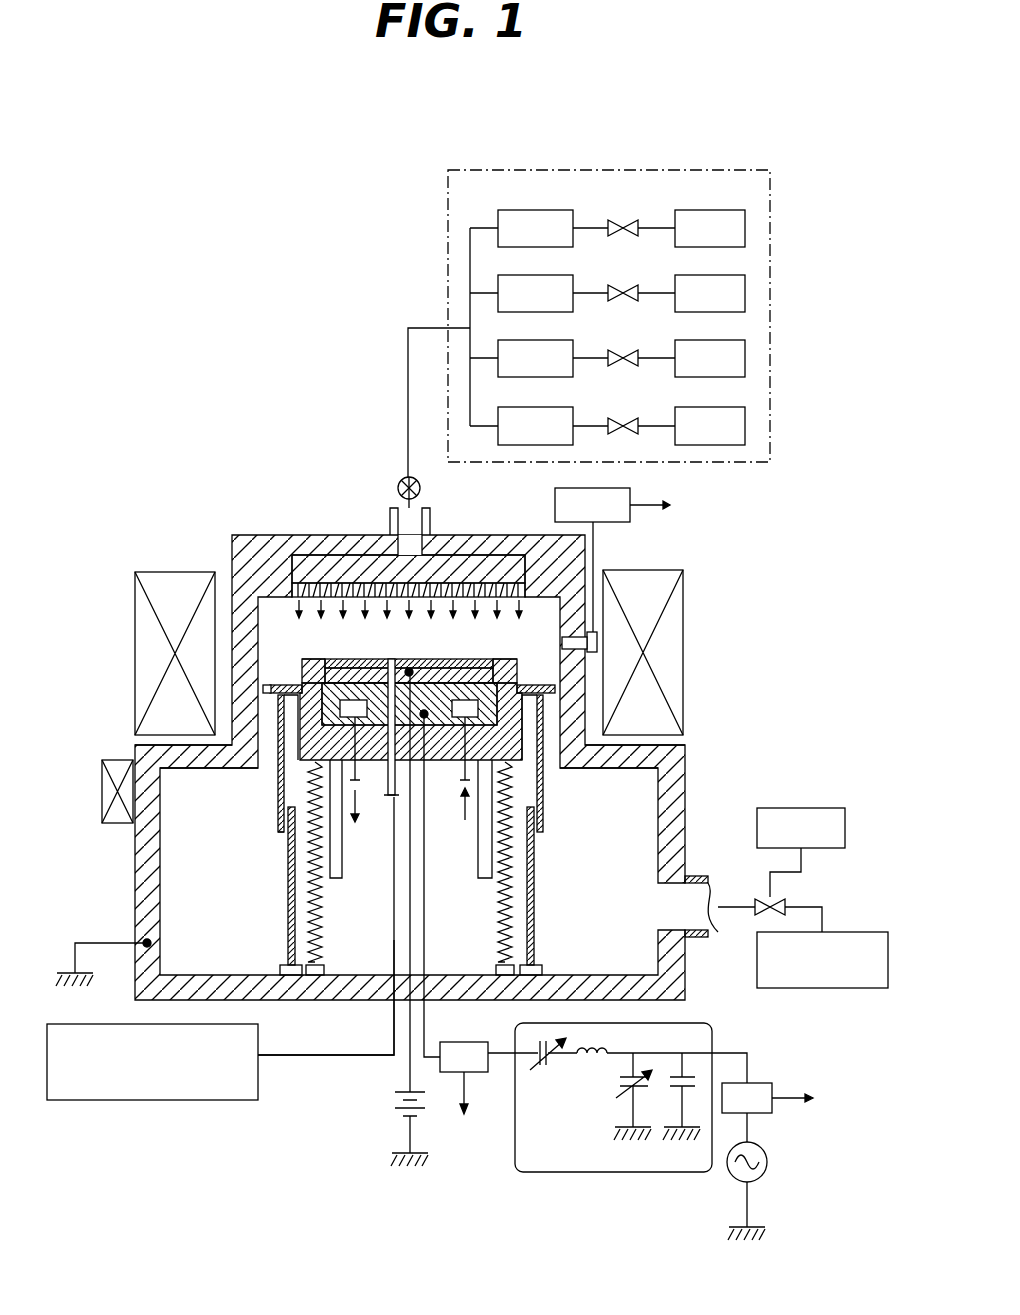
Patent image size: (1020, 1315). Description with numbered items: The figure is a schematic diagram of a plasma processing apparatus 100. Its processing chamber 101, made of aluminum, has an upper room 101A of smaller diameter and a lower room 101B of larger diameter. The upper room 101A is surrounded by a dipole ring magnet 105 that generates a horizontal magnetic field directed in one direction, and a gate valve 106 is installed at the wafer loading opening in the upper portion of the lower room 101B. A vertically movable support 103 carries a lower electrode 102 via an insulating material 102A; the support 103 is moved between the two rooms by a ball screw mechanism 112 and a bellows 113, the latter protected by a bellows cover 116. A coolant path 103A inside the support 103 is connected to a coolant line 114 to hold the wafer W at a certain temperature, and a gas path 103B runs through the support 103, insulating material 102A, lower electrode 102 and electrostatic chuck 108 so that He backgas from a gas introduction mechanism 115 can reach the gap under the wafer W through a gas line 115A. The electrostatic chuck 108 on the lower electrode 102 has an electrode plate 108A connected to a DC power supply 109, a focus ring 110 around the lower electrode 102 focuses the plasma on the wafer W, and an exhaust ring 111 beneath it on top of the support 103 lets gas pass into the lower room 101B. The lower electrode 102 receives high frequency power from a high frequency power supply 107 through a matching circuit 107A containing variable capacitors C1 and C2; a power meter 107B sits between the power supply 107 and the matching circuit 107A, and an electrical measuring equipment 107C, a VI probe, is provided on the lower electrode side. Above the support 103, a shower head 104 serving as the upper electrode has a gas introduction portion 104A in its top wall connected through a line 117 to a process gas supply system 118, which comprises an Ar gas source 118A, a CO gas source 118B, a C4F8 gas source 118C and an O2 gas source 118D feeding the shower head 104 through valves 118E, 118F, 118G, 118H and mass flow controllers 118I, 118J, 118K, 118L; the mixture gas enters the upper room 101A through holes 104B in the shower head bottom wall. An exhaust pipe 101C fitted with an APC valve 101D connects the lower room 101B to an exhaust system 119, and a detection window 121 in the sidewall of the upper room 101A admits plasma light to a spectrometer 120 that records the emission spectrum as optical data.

The plasma processing apparatus 100 is at (363, 152).
The processing chamber 101 is at (439, 767).
The upper room 101A is at (585, 612).
The lower room 101B is at (695, 785).
The exhaust pipe 101C is at (705, 875).
The APC valve 101D is at (748, 915).
The lower electrode 102 is at (285, 722).
The insulating material 102A is at (545, 790).
The support 103 is at (315, 855).
The coolant path 103A is at (310, 668).
The gas path 103B is at (392, 682).
The shower head 104 is at (397, 543).
The gas introduction portion 104A is at (430, 520).
The holes 104B is at (320, 590).
The dipole ring magnet 105 is at (165, 583).
The gate valve 106 is at (115, 763).
The high frequency power supply 107 is at (767, 1157).
The matching circuit 107A is at (617, 1122).
The power meter 107B is at (760, 1083).
The electrical measuring equipment 107C is at (480, 1026).
The electrostatic chuck 108 is at (343, 675).
The electrode plate 108A is at (500, 668).
The DC power supply 109 is at (390, 1102).
The focus ring 110 is at (300, 684).
The exhaust ring 111 is at (265, 690).
The ball screw mechanism 112 is at (343, 857).
The bellows 113 is at (322, 918).
The coolant line 114 is at (360, 782).
The gas introduction mechanism 115 is at (148, 1100).
The gas line 115A is at (393, 940).
The bellows cover 116 is at (278, 826).
The line 117 is at (408, 388).
The process gas supply system 118 is at (653, 348).
The Ar gas source 118A is at (745, 228).
The CO gas source 118B is at (745, 293).
The C4F8 gas source 118C is at (745, 358).
The O2 gas source 118D is at (745, 426).
The valve 118E is at (633, 219).
The valve 118F is at (633, 284).
The valve 118G is at (633, 349).
The valve 118H is at (633, 417).
The mass flow controller 118I is at (534, 211).
The mass flow controller 118J is at (534, 277).
The mass flow controller 118K is at (534, 342).
The mass flow controller 118L is at (534, 407).
The exhaust system 119 is at (870, 990).
The spectrometer 120 is at (623, 523).
The detection window 121 is at (586, 680).
The wafer W is at (490, 662).
The variable capacitor C1 is at (547, 1070).
The variable capacitor C2 is at (614, 1096).